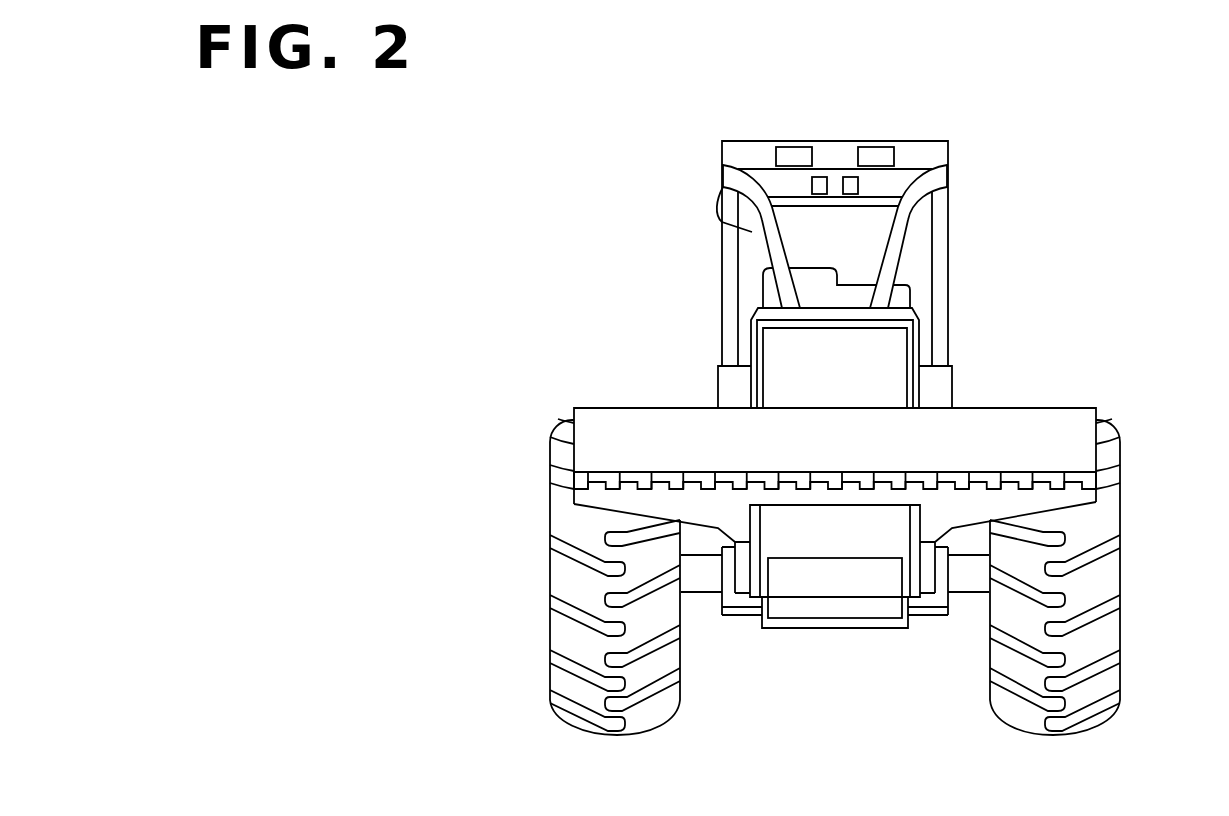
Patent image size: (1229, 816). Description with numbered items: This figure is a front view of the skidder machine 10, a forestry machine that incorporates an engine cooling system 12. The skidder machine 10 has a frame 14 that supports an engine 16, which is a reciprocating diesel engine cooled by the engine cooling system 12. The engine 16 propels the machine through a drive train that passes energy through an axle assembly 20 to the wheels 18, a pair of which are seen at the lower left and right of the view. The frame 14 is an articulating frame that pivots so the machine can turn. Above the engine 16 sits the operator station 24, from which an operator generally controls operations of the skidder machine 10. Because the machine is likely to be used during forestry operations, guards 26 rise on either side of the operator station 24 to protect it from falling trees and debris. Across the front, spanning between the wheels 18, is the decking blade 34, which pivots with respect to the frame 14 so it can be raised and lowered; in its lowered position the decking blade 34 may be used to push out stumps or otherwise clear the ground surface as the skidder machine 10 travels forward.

The skidder machine 10 is at (835, 104).
The engine cooling system 12 is at (925, 321).
The frame 14 is at (935, 600).
The engine 16 is at (903, 388).
The wheels 18 is at (567, 638).
The axle assembly 20 is at (703, 585).
The operator station 24 is at (857, 230).
The guards 26 is at (768, 245).
The decking blade 34 is at (607, 423).